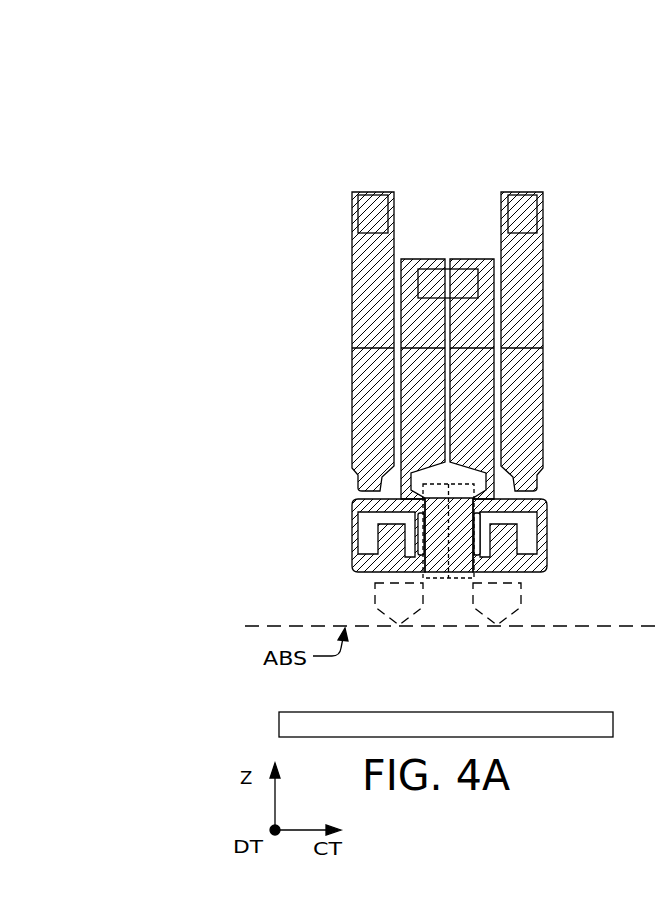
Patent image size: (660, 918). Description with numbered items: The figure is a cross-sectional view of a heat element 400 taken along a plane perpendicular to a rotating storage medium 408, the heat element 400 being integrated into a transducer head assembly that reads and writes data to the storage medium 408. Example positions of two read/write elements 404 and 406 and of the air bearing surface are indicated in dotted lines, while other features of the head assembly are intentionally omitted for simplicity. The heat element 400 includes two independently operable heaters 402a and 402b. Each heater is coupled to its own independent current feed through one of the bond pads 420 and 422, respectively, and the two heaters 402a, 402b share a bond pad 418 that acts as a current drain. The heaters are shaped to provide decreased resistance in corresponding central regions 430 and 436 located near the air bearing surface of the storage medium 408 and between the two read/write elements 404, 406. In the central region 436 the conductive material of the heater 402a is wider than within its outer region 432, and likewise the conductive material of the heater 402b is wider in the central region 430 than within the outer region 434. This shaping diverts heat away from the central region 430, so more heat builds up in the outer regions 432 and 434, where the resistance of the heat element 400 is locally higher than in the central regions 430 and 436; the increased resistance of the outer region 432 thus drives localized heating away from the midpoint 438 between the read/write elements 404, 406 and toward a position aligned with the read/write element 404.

The heat element 400 is at (262, 163).
The heater 402a is at (365, 395).
The heater 402b is at (535, 395).
The bond pad 418 is at (466, 268).
The bond pad 420 is at (370, 220).
The bond pad 422 is at (525, 220).
The central region 430 is at (496, 509).
The outer region 432 is at (342, 524).
The outer region 434 is at (555, 524).
The central region 436 is at (404, 509).
The midpoint 438 is at (450, 578).
The read/write element 404 is at (373, 599).
The read/write element 406 is at (513, 595).
The storage medium 408 is at (290, 733).